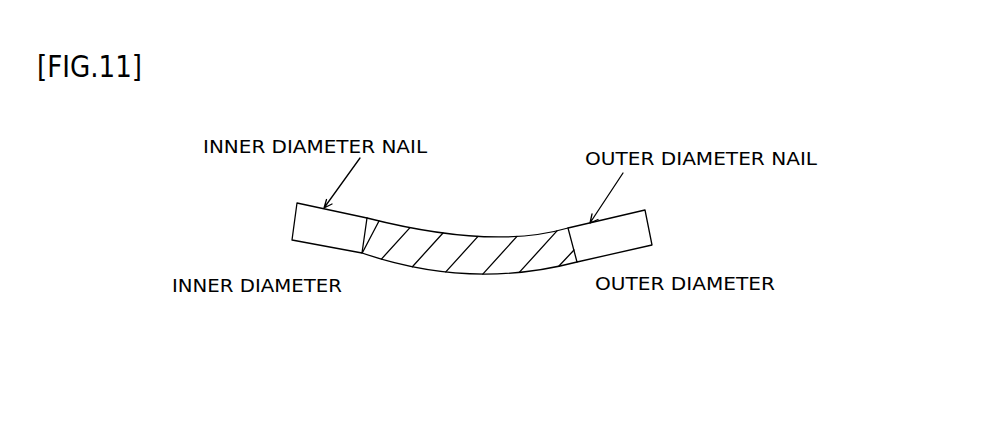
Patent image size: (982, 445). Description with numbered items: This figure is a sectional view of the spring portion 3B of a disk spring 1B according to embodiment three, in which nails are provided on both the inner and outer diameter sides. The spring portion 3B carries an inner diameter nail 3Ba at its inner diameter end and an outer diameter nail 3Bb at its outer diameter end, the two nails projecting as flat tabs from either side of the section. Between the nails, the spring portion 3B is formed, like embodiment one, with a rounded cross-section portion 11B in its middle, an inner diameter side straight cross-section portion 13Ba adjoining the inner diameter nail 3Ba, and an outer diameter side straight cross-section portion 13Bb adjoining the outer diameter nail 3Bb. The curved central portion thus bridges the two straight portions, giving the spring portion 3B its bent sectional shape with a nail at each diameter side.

The disk spring 1B is at (498, 190).
The spring portion 3B is at (536, 225).
The inner diameter nail 3Ba is at (307, 222).
The outer diameter nail 3Bb is at (647, 223).
The rounded cross-section portion 11B is at (483, 274).
The inner diameter side straight cross-section portion 13Ba is at (386, 260).
The outer diameter side straight cross-section portion 13Bb is at (546, 269).